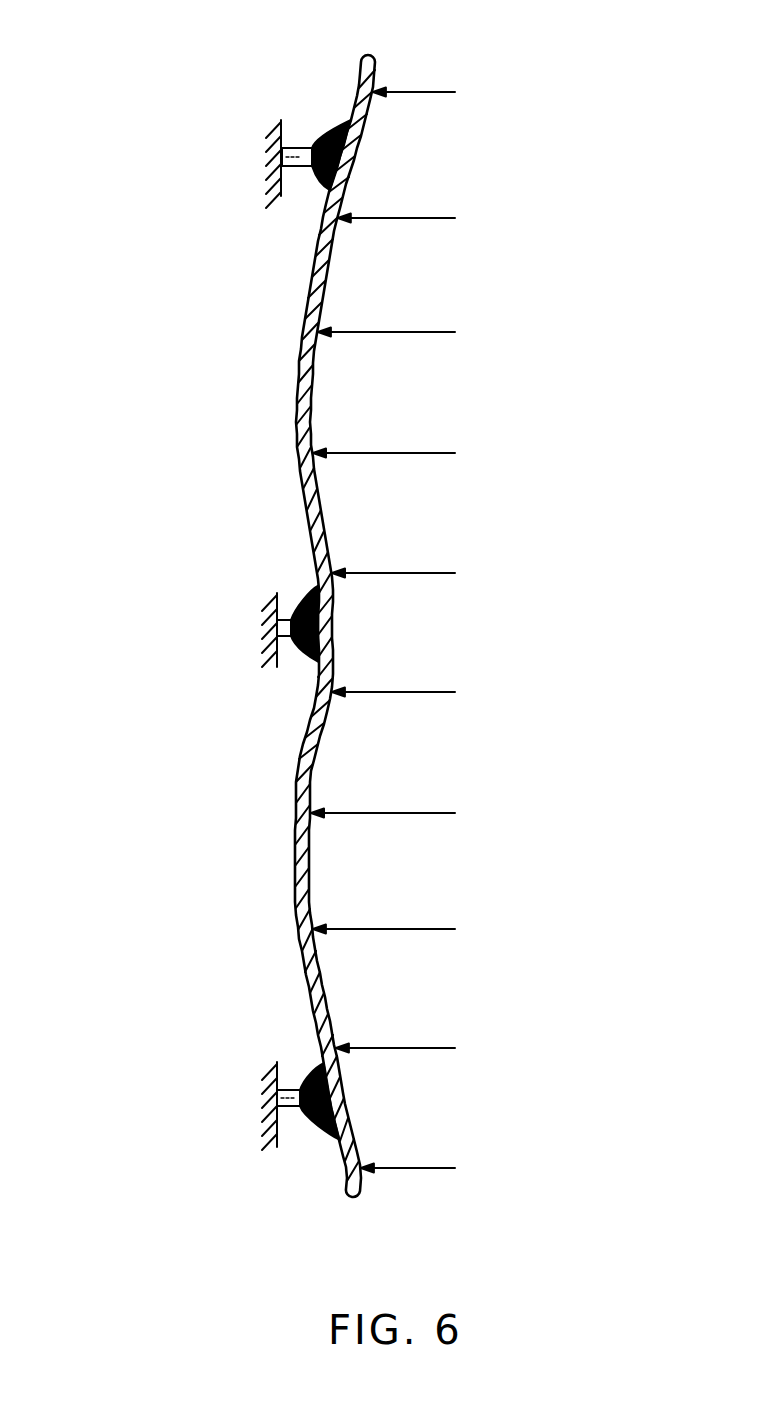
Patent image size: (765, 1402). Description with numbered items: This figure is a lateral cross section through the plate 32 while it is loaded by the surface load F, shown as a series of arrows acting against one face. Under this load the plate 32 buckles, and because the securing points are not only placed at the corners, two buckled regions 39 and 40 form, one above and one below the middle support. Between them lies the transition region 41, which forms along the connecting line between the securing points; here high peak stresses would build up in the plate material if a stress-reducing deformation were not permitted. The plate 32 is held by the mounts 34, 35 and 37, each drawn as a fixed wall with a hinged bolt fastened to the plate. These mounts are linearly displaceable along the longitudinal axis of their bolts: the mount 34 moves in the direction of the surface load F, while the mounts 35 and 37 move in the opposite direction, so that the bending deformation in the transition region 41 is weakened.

The plate 32 is at (297, 770).
The mount 34 is at (292, 148).
The mount 35 is at (288, 1106).
The mount 37 is at (277, 628).
The buckled region 39 is at (311, 387).
The buckled region 40 is at (304, 856).
The transition region 41 is at (332, 622).
The surface load F is at (412, 692).